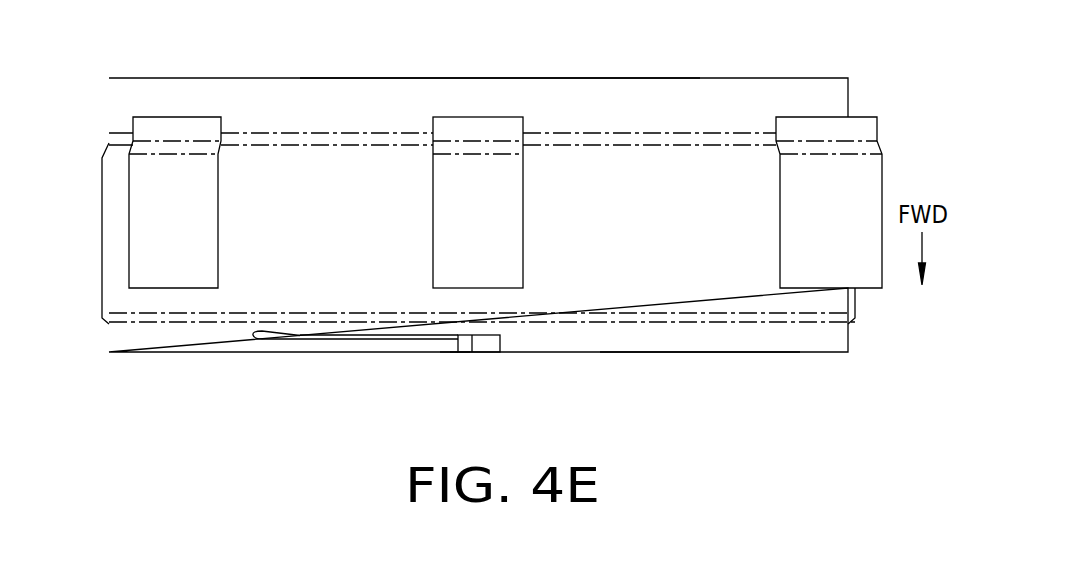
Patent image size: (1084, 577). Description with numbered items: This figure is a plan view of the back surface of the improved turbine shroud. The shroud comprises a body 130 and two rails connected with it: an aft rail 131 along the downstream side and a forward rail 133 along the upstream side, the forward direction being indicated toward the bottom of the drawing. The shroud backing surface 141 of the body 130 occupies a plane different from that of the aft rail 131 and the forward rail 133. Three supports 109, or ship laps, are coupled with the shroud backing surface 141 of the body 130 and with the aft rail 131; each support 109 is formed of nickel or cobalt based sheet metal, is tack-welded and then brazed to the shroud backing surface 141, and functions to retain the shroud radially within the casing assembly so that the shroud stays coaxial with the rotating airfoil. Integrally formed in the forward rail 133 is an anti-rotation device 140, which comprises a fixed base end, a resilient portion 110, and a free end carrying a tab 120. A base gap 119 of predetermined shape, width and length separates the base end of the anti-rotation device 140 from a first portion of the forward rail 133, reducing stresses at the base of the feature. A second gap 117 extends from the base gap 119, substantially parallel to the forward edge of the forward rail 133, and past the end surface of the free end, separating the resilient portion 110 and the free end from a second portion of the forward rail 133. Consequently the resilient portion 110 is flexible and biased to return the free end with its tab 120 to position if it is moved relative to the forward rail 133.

The support 109 is at (140, 220).
The resilient portion 110 is at (446, 354).
The second gap 117 is at (360, 335).
The base gap 119 is at (250, 352).
The tab 120 is at (485, 343).
The body 130 is at (578, 163).
The aft rail 131 is at (728, 78).
The forward rail 133 is at (722, 352).
The anti-rotation device 140 is at (452, 400).
The shroud backing surface 141 is at (634, 240).